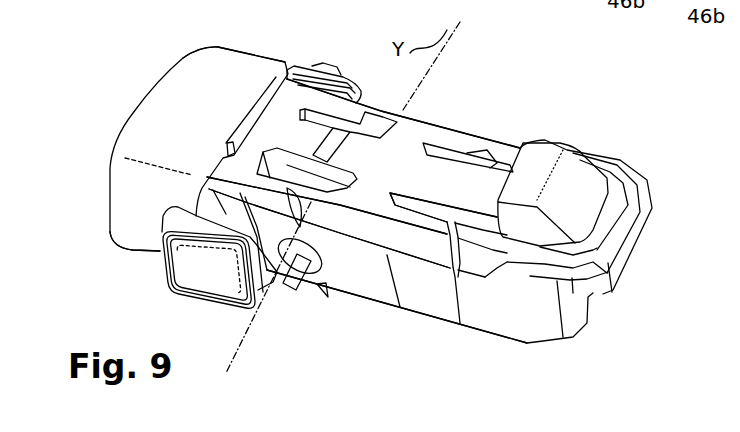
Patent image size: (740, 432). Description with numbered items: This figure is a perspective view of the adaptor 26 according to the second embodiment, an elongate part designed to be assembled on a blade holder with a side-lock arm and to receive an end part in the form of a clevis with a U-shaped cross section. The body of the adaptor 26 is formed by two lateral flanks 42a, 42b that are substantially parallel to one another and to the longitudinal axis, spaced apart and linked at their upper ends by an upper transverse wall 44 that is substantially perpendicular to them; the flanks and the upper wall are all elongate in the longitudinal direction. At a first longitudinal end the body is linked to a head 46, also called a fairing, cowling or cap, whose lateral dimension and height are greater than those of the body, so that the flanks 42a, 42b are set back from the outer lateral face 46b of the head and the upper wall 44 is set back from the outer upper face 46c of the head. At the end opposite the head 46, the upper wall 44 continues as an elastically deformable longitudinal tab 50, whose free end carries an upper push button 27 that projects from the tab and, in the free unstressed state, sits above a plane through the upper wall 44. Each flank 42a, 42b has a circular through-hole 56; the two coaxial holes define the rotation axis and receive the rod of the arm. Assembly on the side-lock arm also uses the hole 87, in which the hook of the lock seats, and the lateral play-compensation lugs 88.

The adaptor 26 is at (531, 85).
The upper push button 27 is at (535, 162).
The lateral flank 42a is at (455, 130).
The lateral flank 42b is at (382, 308).
The upper transverse wall 44 is at (397, 158).
The head 46 is at (175, 50).
The outer lateral face of the head 46b is at (133, 251).
The outer upper face of the head 46c is at (210, 87).
The longitudinal tab 50 is at (472, 180).
The through-hole 56 is at (300, 264).
The hole 87 is at (313, 65).
The lateral play-compensation lugs 88 is at (340, 70).